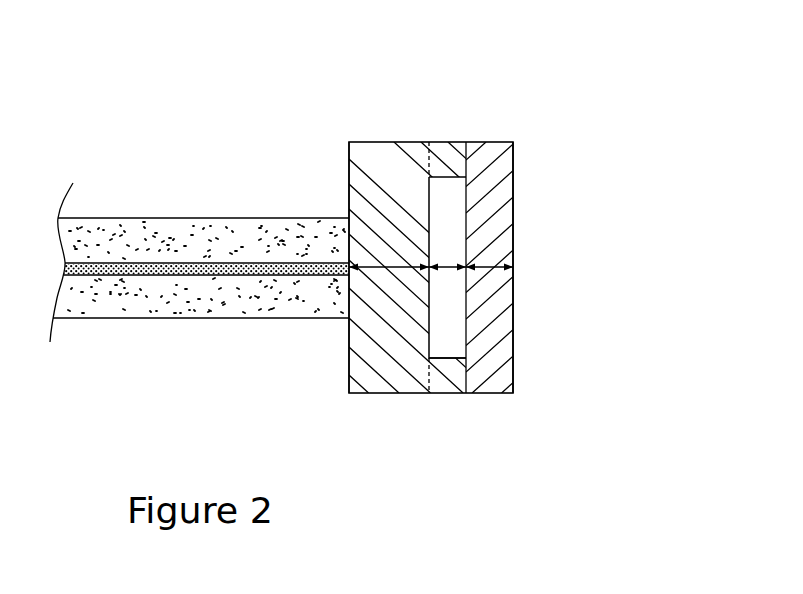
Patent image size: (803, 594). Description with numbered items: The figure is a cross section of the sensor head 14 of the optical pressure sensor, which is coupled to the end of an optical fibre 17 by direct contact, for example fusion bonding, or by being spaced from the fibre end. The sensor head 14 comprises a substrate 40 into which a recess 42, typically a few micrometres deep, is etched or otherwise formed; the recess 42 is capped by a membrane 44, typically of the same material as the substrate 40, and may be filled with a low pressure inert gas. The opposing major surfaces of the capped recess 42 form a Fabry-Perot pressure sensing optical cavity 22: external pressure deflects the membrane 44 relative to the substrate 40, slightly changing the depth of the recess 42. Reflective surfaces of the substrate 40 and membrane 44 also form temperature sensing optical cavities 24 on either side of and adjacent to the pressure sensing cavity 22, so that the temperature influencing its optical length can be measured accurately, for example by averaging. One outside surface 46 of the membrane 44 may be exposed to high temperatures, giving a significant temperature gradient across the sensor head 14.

The sensor head 14 is at (444, 106).
The optical fibre 17 is at (135, 303).
The pressure sensing optical cavity 22 is at (445, 270).
The temperature sensing optical cavity 24 is at (378, 262).
The substrate 40 is at (381, 384).
The recess 42 is at (459, 205).
The membrane 44 is at (500, 383).
The outside surface 46 is at (520, 358).